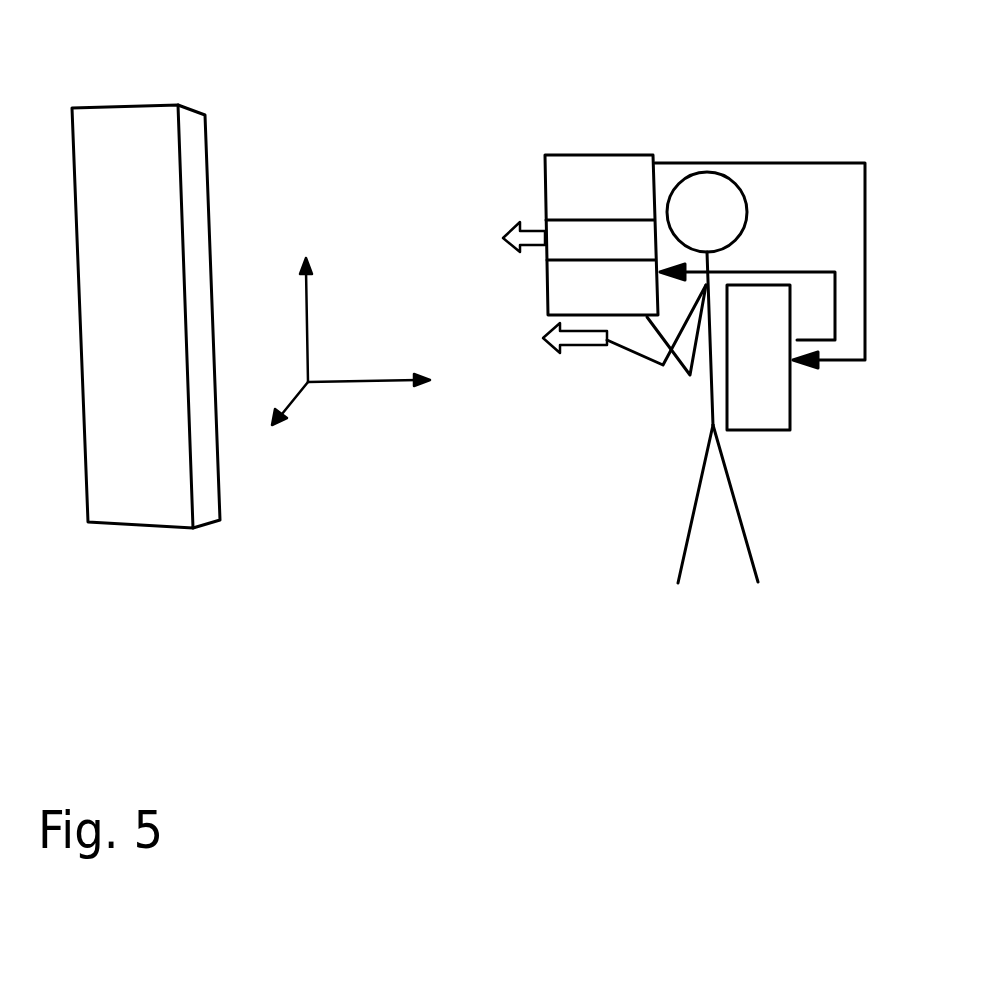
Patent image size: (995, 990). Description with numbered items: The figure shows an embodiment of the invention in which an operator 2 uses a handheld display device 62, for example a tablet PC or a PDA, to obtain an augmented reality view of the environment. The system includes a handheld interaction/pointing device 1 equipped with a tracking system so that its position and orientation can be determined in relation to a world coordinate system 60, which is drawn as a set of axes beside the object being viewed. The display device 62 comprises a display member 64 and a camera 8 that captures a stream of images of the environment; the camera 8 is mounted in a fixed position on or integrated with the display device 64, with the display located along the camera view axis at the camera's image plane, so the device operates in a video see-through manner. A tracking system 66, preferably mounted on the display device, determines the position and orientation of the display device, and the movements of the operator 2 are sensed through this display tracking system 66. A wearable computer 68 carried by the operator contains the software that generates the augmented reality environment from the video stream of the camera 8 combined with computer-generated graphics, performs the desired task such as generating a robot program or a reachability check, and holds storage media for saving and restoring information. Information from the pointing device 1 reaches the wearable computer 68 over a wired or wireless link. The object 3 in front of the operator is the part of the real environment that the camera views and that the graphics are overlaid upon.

The handheld interaction/pointing device 1 is at (548, 350).
The operator 2 is at (753, 237).
The measured object (slab) 3 is at (143, 533).
The camera 8 is at (495, 226).
The world coordinate system 60 is at (350, 403).
The handheld display device 62 is at (537, 135).
The display member 64 is at (533, 273).
The tracking system 66 is at (665, 155).
The wearable computer 68 is at (778, 435).